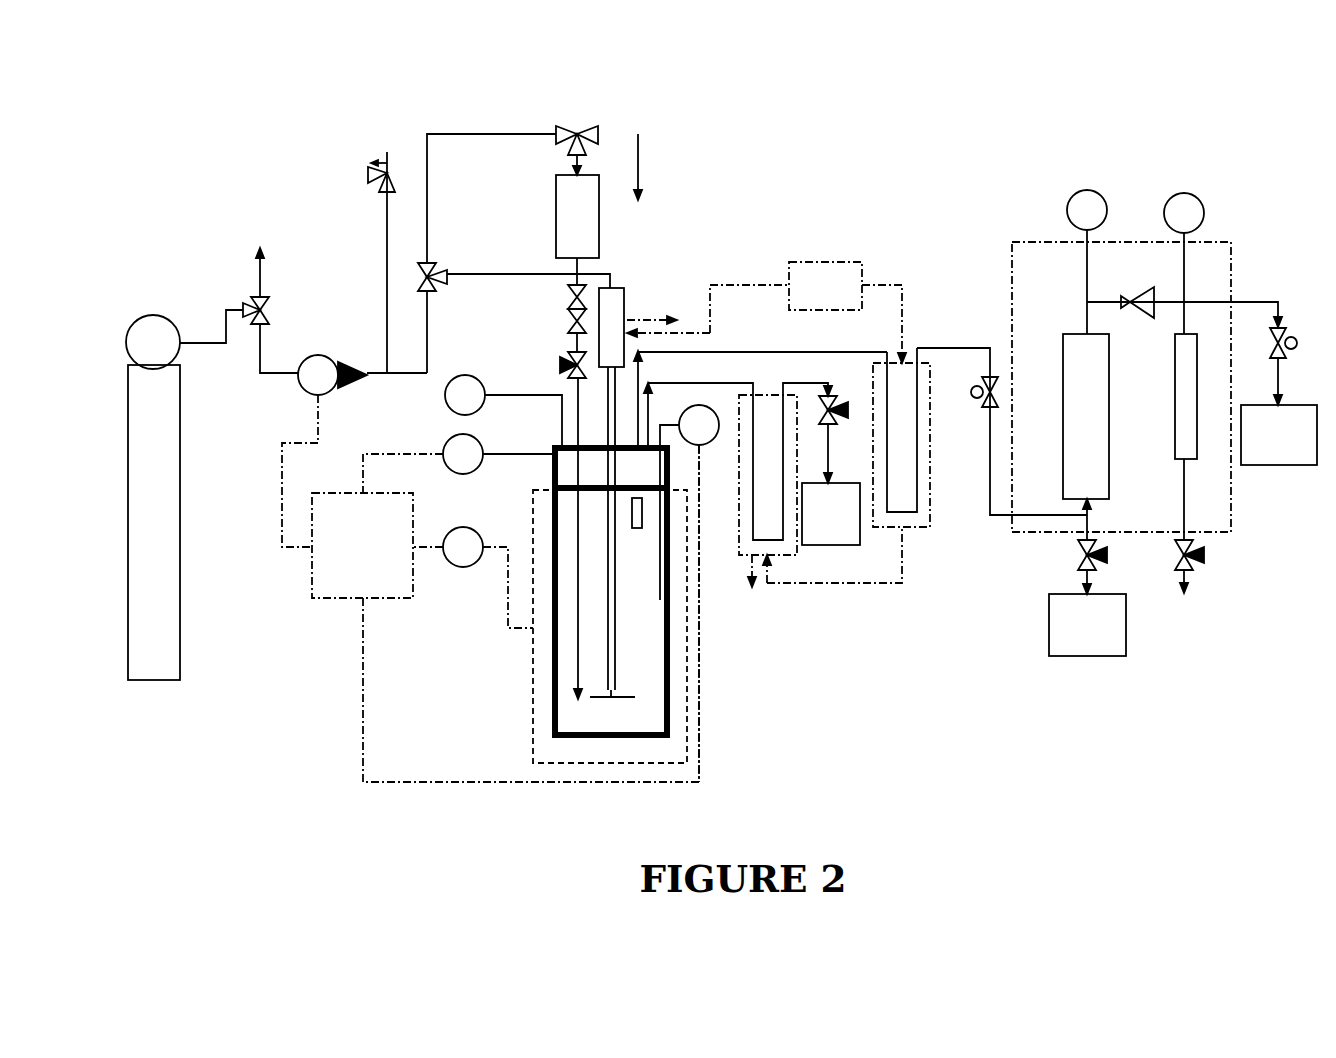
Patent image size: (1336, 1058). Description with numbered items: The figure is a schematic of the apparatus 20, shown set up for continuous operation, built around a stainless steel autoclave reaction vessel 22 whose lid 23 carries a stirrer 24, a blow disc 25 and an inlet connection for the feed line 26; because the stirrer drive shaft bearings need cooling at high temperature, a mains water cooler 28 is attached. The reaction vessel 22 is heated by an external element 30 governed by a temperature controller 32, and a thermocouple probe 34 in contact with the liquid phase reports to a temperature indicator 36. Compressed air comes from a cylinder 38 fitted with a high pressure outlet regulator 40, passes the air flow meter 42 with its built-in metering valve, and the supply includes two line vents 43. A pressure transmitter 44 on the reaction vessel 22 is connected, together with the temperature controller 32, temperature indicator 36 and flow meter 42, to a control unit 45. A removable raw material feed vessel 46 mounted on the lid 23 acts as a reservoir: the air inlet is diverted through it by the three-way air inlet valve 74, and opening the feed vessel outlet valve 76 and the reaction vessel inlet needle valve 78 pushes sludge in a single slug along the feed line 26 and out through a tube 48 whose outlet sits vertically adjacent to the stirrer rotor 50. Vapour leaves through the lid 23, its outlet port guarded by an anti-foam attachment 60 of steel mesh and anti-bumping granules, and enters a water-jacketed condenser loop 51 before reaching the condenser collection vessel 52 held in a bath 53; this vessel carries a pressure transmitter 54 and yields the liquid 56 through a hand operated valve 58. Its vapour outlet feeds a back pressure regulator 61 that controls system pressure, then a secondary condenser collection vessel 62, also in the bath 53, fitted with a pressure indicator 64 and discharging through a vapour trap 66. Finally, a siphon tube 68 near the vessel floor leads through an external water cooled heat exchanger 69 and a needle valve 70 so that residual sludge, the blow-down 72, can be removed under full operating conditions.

The apparatus 20 is at (1238, 103).
The reaction vessel 22 is at (670, 703).
The lid 23 is at (595, 445).
The stirrer 24 is at (620, 300).
The blow disc 25 is at (503, 410).
The feed line 26 is at (575, 392).
The mains water cooler 28 is at (766, 312).
The external element 30 is at (610, 627).
The temperature controller 32 is at (473, 577).
The thermocouple probe 34 is at (660, 583).
The temperature indicator 36 is at (689, 593).
The cylinder 38 is at (154, 522).
The high pressure outlet regulator 40 is at (184, 339).
The air flow meter 42 is at (354, 451).
The line vents 43 is at (459, 253).
The pressure transmitter 44 is at (457, 463).
The control unit 45 is at (362, 545).
The raw material feed vessel 46 is at (577, 224).
The tube 48 is at (690, 352).
The stirrer rotor 50 is at (640, 667).
The condenser loop 51 is at (901, 437).
The condenser collection vessel 52 is at (1086, 437).
The bath 53 is at (1243, 257).
The pressure transmitter 54 is at (1087, 262).
The liquid 56 is at (1087, 625).
The hand operated valve 58 is at (1108, 567).
The anti-foam attachment 60 is at (642, 515).
The back pressure regulator 61 is at (1135, 288).
The secondary condenser collection vessel 62 is at (1197, 455).
The pressure indicator 64 is at (1184, 263).
The vapour trap 66 is at (1250, 383).
The siphon tube 68 is at (640, 667).
The heat exchanger 69 is at (773, 485).
The needle valve 70 is at (843, 433).
The blow-down 72 is at (831, 514).
The 3-way air inlet valve 74 is at (487, 253).
The raw material feed vessel outlet valve 76 is at (560, 303).
The reaction vessel inlet needle valve 78 is at (560, 355).